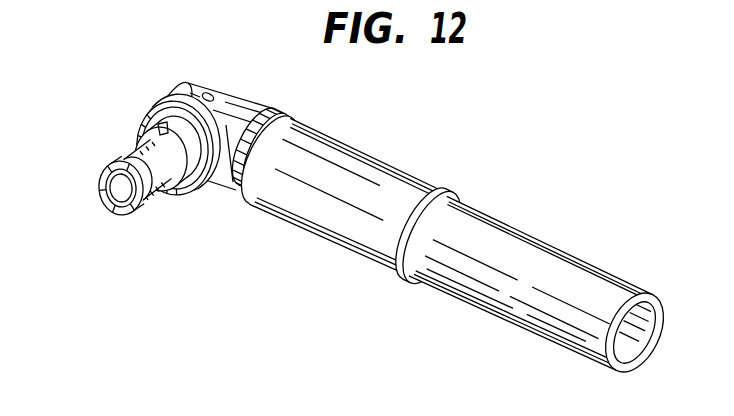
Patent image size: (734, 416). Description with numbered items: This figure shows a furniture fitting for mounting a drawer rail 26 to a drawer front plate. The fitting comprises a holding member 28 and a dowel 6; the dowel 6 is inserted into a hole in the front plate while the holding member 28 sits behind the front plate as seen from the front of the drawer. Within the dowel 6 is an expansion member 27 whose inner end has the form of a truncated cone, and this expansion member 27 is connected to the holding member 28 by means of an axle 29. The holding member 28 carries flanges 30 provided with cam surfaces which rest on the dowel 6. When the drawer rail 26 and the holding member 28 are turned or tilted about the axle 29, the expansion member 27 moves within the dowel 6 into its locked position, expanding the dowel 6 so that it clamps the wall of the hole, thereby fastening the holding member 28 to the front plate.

The dowel 6 is at (170, 196).
The drawer rail 26 is at (489, 243).
The expansion member 27 is at (100, 186).
The holding member 28 is at (405, 185).
The axle 29 is at (212, 98).
The flanges 30 is at (264, 110).